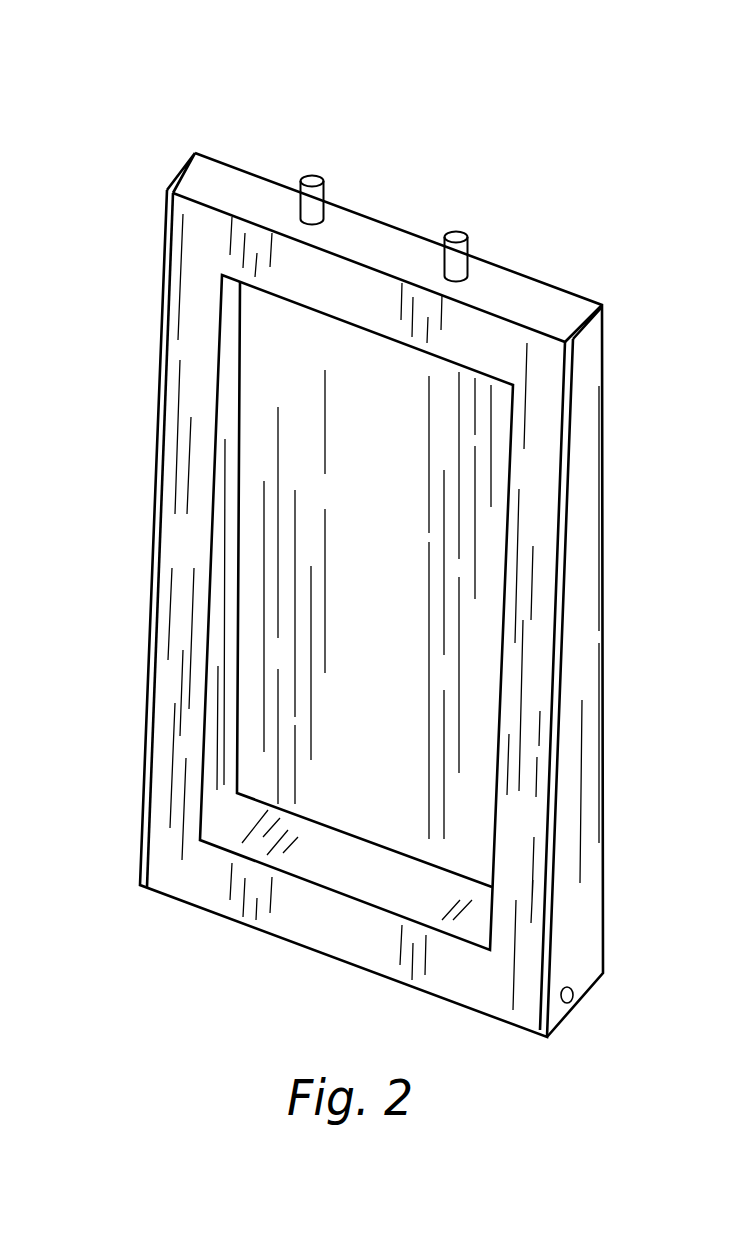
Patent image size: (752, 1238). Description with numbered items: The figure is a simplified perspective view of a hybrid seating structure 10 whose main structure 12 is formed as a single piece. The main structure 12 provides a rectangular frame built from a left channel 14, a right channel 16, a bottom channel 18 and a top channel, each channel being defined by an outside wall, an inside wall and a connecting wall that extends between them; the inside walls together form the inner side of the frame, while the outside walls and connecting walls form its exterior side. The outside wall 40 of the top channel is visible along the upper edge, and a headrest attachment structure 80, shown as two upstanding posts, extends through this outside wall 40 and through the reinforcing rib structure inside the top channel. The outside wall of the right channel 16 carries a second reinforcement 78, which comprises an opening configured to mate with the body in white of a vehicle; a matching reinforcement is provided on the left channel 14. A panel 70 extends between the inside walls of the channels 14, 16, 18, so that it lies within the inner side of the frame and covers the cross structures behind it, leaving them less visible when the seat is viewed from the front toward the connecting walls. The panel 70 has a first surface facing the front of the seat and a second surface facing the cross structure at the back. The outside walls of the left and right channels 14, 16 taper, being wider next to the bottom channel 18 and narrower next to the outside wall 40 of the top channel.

The hybrid seating structure 10 is at (592, 106).
The main structure 12 is at (122, 691).
The left channel 14 is at (202, 388).
The right channel 16 is at (515, 810).
The bottom channel 18 is at (328, 923).
The outside wall of the top channel 40 is at (528, 305).
The panel 70 is at (365, 575).
The second reinforcement 78 is at (585, 658).
The headrest attachment structure 80 is at (455, 260).